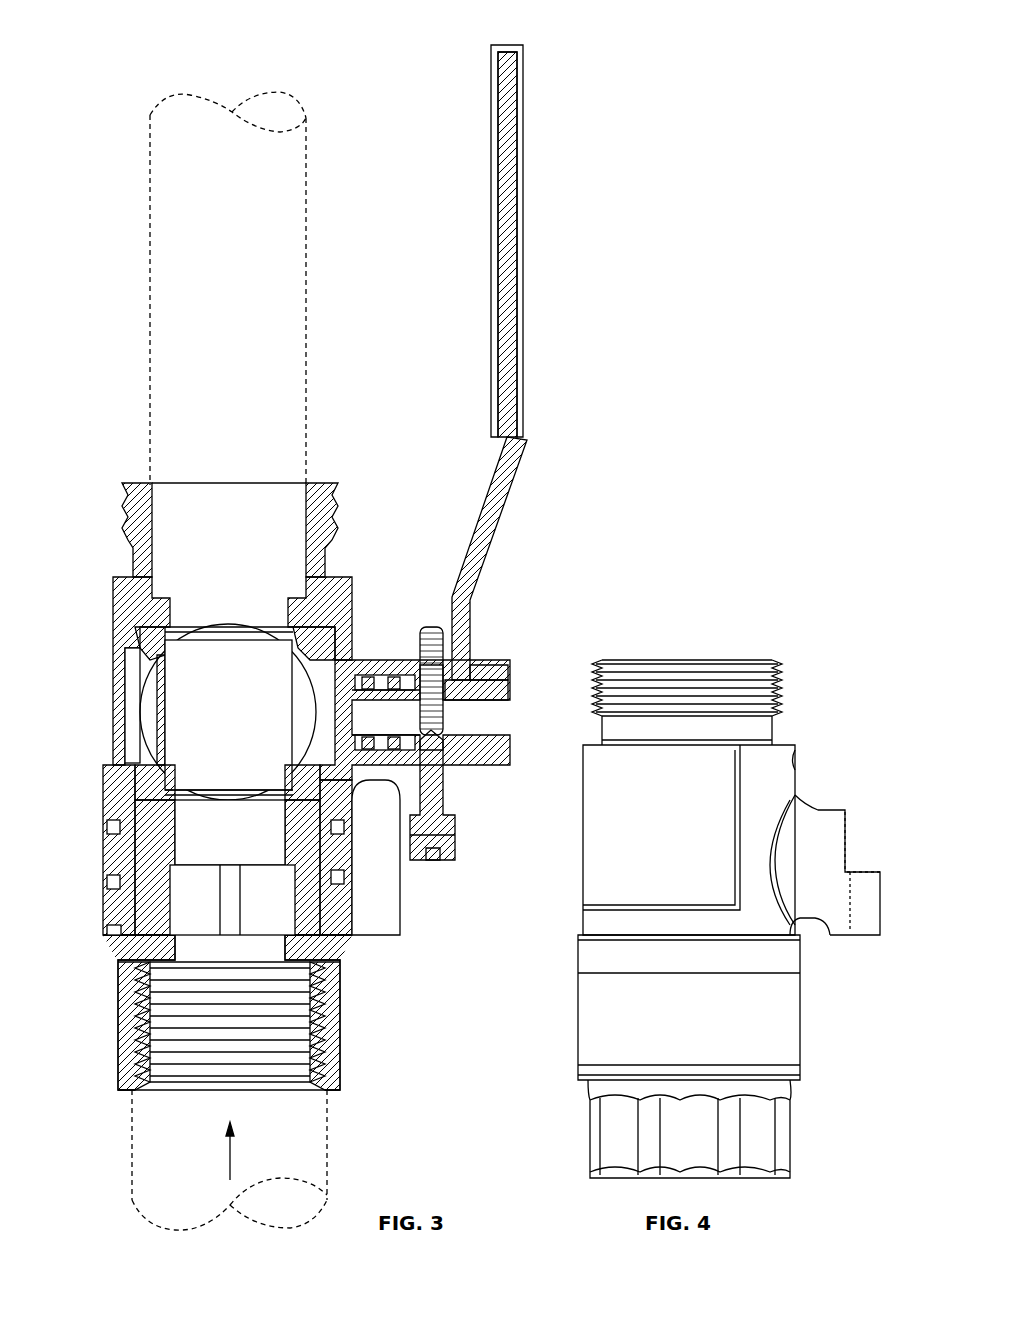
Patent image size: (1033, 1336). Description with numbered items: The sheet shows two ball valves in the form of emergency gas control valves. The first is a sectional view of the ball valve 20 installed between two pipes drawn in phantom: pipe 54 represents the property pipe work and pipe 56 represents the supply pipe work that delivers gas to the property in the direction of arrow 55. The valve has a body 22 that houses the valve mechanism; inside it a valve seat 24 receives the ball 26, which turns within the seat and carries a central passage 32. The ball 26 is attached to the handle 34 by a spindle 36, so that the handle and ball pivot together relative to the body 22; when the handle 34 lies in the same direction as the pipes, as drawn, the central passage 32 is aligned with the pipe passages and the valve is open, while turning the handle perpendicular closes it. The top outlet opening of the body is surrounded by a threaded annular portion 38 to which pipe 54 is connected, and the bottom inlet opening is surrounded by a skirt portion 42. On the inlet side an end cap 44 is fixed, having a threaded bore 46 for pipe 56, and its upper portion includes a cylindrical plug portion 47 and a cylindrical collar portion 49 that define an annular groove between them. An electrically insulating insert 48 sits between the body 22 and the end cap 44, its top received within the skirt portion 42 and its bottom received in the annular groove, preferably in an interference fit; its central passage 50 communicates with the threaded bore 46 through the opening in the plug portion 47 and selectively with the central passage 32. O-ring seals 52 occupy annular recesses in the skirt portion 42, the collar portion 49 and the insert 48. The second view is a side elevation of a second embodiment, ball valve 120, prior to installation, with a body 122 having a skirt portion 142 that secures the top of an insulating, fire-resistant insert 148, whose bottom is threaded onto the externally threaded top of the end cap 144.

In FIG. 3, the ball valve 20 is at (105, 48).
In FIG. 3, the body 22 is at (113, 702).
In FIG. 3, the valve seat 24 is at (138, 640).
In FIG. 3, the ball 26 is at (340, 660).
In FIG. 3, the central passage 32 is at (228, 712).
In FIG. 3, the handle 34 is at (523, 240).
In FIG. 3, the spindle 36 is at (410, 665).
In FIG. 3, the threaded annular portion 38 is at (122, 512).
In FIG. 3, the skirt portion 42 is at (110, 792).
In FIG. 3, the end cap 44 is at (118, 1035).
In FIG. 3, the threaded bore 46 is at (325, 1035).
In FIG. 3, the plug portion 47 is at (270, 905).
In FIG. 3, the insert 48 is at (135, 858).
In FIG. 3, the collar portion 49 is at (110, 910).
In FIG. 3, the central passage 50 is at (230, 832).
In FIG. 3, the O-ring seals 52 is at (345, 830).
In FIG. 3, the pipe 54 is at (150, 300).
In FIG. 3, the arrow 55 is at (228, 1152).
In FIG. 3, the pipe 56 is at (132, 1130).
In FIG. 4, the ball valve 120 is at (797, 630).
In FIG. 4, the body 122 is at (731, 797).
In FIG. 4, the skirt portion 142 is at (797, 958).
In FIG. 4, the end cap 144 is at (610, 1135).
In FIG. 4, the insert 148 is at (689, 1007).